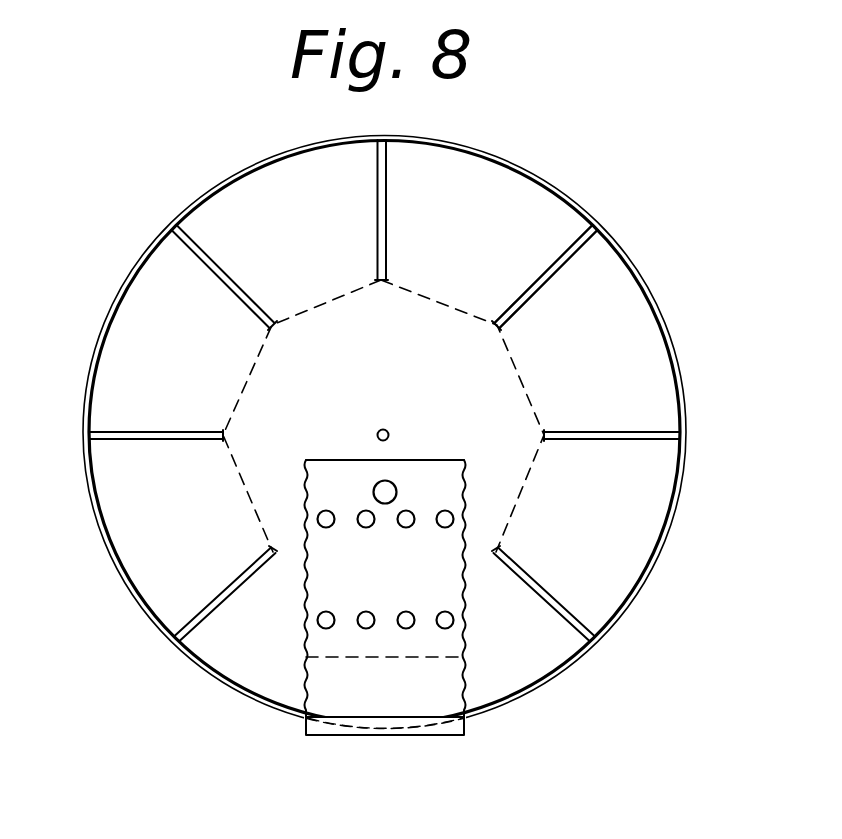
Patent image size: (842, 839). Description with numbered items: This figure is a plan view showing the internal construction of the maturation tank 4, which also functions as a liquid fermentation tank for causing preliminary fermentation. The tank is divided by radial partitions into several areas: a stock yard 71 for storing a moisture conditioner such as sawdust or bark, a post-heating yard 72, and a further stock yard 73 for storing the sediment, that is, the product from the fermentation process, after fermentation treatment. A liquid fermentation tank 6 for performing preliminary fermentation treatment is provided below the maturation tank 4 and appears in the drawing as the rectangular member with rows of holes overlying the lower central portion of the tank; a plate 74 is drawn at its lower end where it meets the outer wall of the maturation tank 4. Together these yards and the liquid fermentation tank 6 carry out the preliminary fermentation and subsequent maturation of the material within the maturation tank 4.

The maturation tank 4 is at (566, 177).
The liquid fermentation tank 6 is at (348, 694).
The stock yard 71 is at (145, 565).
The post-heating yard 72 is at (613, 593).
The stock yard 73 is at (607, 288).
The bottom plate 74 is at (467, 722).